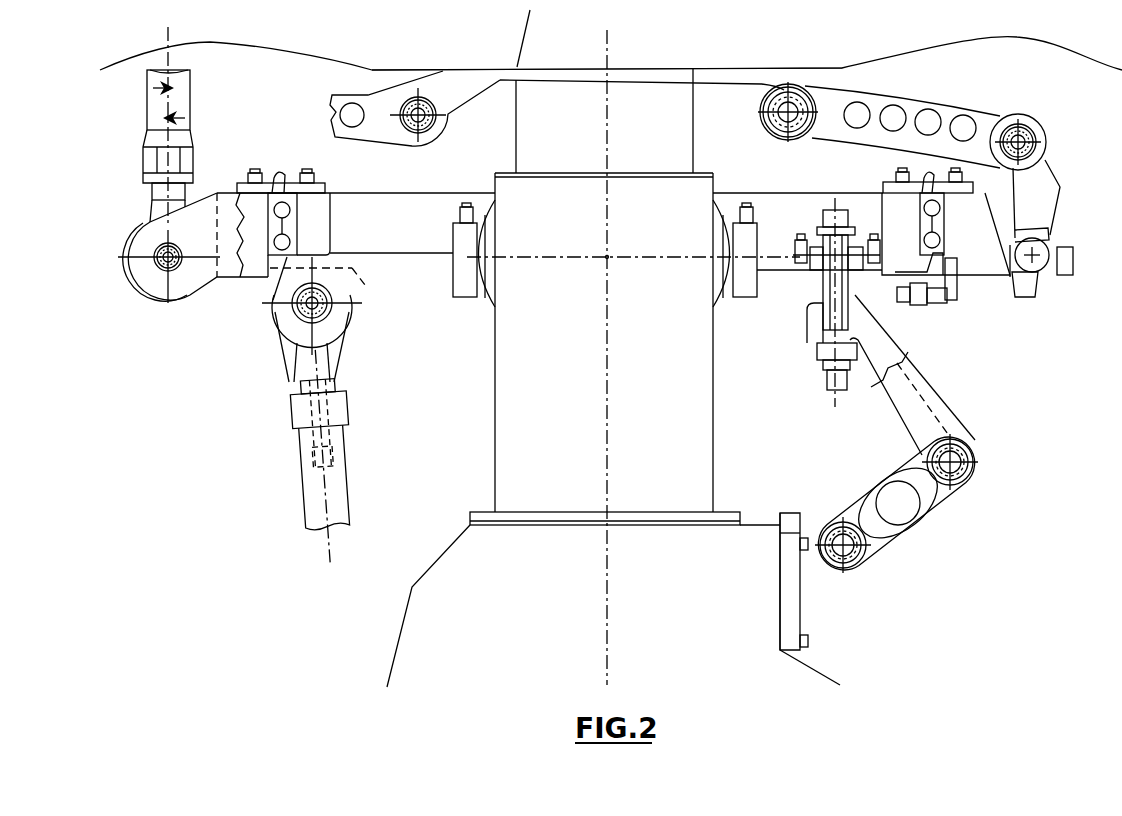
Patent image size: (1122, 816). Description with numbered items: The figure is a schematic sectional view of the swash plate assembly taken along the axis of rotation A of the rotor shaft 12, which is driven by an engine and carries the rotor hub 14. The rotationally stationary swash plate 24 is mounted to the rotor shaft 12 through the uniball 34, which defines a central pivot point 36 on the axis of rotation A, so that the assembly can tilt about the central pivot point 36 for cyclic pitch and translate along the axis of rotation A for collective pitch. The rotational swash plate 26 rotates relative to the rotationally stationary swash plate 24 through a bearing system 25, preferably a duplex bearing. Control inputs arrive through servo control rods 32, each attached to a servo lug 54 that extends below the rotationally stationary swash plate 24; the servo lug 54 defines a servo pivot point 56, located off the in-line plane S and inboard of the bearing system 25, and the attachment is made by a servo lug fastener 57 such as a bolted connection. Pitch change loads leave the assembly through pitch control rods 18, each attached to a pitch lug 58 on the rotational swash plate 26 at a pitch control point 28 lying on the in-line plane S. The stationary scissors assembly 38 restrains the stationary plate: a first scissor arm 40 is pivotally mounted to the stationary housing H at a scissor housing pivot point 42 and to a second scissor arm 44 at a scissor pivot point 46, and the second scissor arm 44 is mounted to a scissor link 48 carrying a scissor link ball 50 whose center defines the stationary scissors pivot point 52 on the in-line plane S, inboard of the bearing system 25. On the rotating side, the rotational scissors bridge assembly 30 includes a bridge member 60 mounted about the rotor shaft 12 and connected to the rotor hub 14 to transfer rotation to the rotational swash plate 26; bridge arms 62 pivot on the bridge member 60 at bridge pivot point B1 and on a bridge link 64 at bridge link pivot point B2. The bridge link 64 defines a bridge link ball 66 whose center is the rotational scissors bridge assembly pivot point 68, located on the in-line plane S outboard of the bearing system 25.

The rotor shaft 12 is at (667, 138).
The rotor hub 14 is at (459, 36).
The pitch control rod 18 is at (186, 104).
The rotationally stationary swash plate 24 is at (410, 262).
The bearing system 25 is at (287, 218).
The rotational swash plate 26 is at (200, 264).
The pitch control point 28 is at (164, 250).
The rotational scissors bridge assembly 30 is at (882, 109).
The servo control rod 32 is at (330, 460).
The uniball 34 is at (493, 290).
The central pivot point 36 is at (608, 258).
The stationary scissors assembly 38 is at (918, 519).
The first scissor arm 40 is at (905, 515).
The scissor housing pivot point 42 is at (855, 555).
The second scissor arm 44 is at (910, 408).
The scissor pivot point 46 is at (962, 470).
The scissor link 48 is at (798, 330).
The scissor link ball 50 is at (853, 262).
The stationary scissors pivot point 52 is at (832, 250).
The servo lug 54 is at (343, 322).
The servo pivot point 56 is at (281, 341).
The servo lug fastener 57 is at (333, 293).
The pitch lug 58 is at (137, 268).
The bridge member 60 is at (712, 68).
The bridge arm 62 is at (950, 110).
The bridge link 64 is at (1050, 190).
The bridge link ball 66 is at (1048, 243).
The rotational scissors bridge assembly pivot point 68 is at (1040, 278).
The axis of rotation A is at (607, 580).
The swash plate in-line plane S is at (562, 258).
The stationary housing H is at (724, 676).
The bridge pivot point B1 is at (433, 130).
The bridge link pivot point B2 is at (1030, 140).